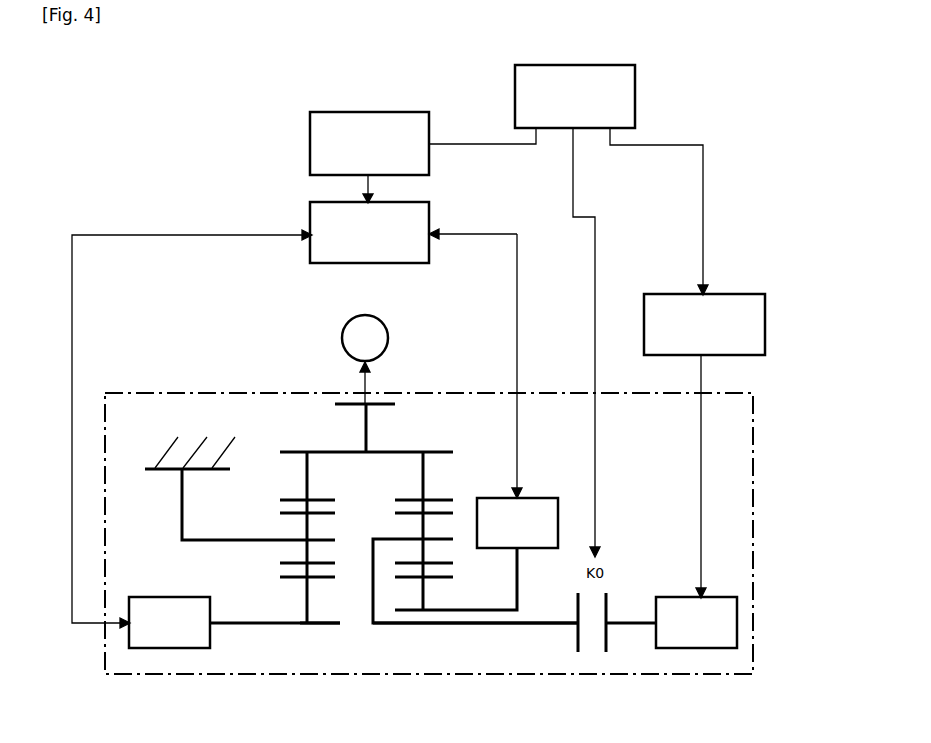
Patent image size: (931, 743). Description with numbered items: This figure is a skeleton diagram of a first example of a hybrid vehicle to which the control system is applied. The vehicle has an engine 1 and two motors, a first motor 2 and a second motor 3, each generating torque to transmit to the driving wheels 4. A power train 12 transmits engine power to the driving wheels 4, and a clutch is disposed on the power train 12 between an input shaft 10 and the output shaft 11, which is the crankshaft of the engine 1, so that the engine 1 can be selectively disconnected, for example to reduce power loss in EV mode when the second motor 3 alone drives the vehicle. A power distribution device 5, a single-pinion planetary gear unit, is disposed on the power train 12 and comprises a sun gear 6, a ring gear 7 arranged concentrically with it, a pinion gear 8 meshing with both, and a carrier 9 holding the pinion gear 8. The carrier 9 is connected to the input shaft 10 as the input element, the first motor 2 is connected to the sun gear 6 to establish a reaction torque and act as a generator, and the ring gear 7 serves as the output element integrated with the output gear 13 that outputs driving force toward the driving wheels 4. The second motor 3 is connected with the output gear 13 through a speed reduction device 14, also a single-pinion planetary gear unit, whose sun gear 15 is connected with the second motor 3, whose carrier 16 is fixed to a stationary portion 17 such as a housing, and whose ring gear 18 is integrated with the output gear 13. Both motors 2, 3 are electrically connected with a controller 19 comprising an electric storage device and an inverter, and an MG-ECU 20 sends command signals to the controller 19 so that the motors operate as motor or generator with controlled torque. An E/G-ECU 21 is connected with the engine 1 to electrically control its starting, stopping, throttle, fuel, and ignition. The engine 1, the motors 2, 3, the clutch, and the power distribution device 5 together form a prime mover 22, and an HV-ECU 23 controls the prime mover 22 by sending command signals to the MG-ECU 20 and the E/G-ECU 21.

The engine 1 is at (718, 597).
The first motor 2 is at (537, 497).
The second motor 3 is at (163, 597).
The driving wheels 4 is at (388, 344).
The power distribution device 5 is at (465, 462).
The sun gear 6 is at (435, 578).
The ring gear 7 is at (408, 497).
The pinion gear 8 is at (443, 513).
The carrier 9 is at (393, 537).
The input shaft 10 is at (530, 625).
The output shaft 11 is at (632, 620).
The power train 12 is at (308, 648).
The output gear 13 is at (375, 406).
The speed reduction device 14 is at (268, 593).
The sun gear 15 is at (320, 578).
The carrier 16 is at (218, 540).
The stationary portion 17 is at (180, 453).
The ring gear 18 is at (293, 500).
The controller 19 is at (429, 214).
The MG-ECU 20 is at (378, 112).
The E/G-ECU 21 is at (742, 294).
The prime mover 22 is at (754, 483).
The HV-ECU 23 is at (635, 92).